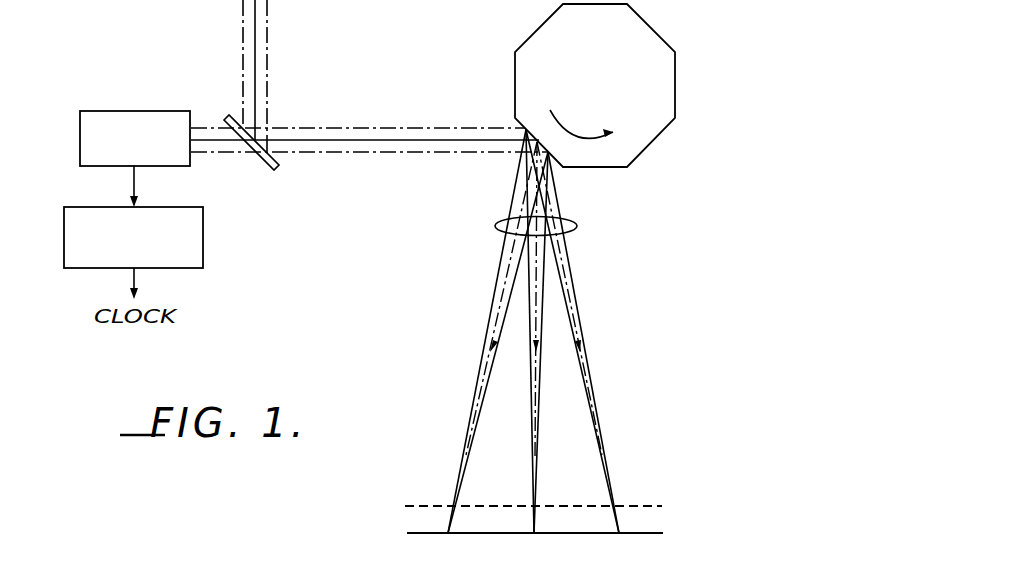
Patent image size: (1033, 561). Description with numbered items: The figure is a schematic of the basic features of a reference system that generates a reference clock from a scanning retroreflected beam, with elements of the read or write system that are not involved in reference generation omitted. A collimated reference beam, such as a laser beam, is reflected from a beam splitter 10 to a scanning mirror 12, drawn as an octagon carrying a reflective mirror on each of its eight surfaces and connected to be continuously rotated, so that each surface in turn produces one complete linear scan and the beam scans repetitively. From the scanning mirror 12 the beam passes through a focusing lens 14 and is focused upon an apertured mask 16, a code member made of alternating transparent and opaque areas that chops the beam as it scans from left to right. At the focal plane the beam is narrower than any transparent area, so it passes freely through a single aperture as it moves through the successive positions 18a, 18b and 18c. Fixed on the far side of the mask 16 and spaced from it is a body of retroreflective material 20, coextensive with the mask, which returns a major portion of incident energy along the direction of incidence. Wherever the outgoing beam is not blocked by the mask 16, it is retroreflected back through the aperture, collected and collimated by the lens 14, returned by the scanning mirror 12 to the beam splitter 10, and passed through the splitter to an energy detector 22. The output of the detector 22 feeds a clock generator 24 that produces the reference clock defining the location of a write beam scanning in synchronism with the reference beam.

The beam splitter 10 is at (264, 172).
The scanning mirror 12 is at (680, 40).
The focusing lens 14 is at (576, 233).
The apertured mask 16 is at (433, 500).
The beam position 18a is at (506, 283).
The beam position 18b is at (532, 420).
The beam position 18c is at (573, 304).
The retroreflective material 20 is at (648, 532).
The energy detector 22 is at (120, 111).
The clock generator 24 is at (77, 206).